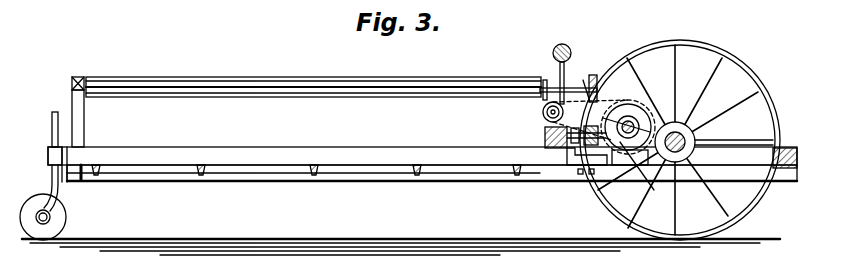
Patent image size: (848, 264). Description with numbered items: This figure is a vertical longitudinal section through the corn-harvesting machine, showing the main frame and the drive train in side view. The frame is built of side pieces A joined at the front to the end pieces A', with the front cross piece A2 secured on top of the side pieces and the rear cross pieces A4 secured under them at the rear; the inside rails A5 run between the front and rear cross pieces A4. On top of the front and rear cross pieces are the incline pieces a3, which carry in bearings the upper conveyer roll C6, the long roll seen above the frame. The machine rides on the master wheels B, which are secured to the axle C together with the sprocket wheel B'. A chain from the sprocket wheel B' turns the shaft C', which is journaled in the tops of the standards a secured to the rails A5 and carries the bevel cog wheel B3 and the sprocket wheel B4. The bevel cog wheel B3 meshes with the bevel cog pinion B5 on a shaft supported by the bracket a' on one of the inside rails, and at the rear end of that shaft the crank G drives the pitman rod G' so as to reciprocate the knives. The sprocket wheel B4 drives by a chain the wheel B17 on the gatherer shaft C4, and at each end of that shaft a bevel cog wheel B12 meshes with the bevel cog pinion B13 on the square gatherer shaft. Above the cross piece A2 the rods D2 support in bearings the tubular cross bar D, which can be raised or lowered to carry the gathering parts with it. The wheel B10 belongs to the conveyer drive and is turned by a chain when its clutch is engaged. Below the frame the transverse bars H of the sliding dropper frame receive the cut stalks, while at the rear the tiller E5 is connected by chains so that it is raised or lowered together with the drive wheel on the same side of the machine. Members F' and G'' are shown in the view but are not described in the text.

The side pieces A is at (422, 156).
The end pieces A' is at (796, 174).
The front cross piece A2 is at (548, 182).
The rear cross pieces A4 is at (62, 170).
The inside rails A5 is at (303, 189).
The standards a is at (611, 165).
The bracket a' is at (578, 192).
The incline pieces a3 is at (84, 127).
The master wheels B is at (680, 140).
The sprocket wheel B' is at (712, 179).
The bevel cog wheel B3 is at (632, 104).
The sprocket wheel B4 is at (638, 118).
The bevel cog pinion B5 is at (642, 174).
The wheel B10 is at (594, 78).
The bevel cog wheel B12 is at (545, 118).
The bevel cog pinion B13 is at (543, 108).
The wheel B17 is at (545, 104).
The axle C is at (688, 146).
The shaft C' is at (722, 161).
The shaft C4 is at (545, 142).
The upper conveyer roll C6 is at (290, 77).
The tubular cross bar D is at (552, 51).
The rods D2 is at (568, 67).
The tillers E5 is at (52, 176).
The clutch arm F' is at (657, 105).
The crank G is at (611, 179).
The pitman rod G' is at (539, 136).
The clutch collar G'' is at (569, 147).
The transverse bars H is at (96, 176).